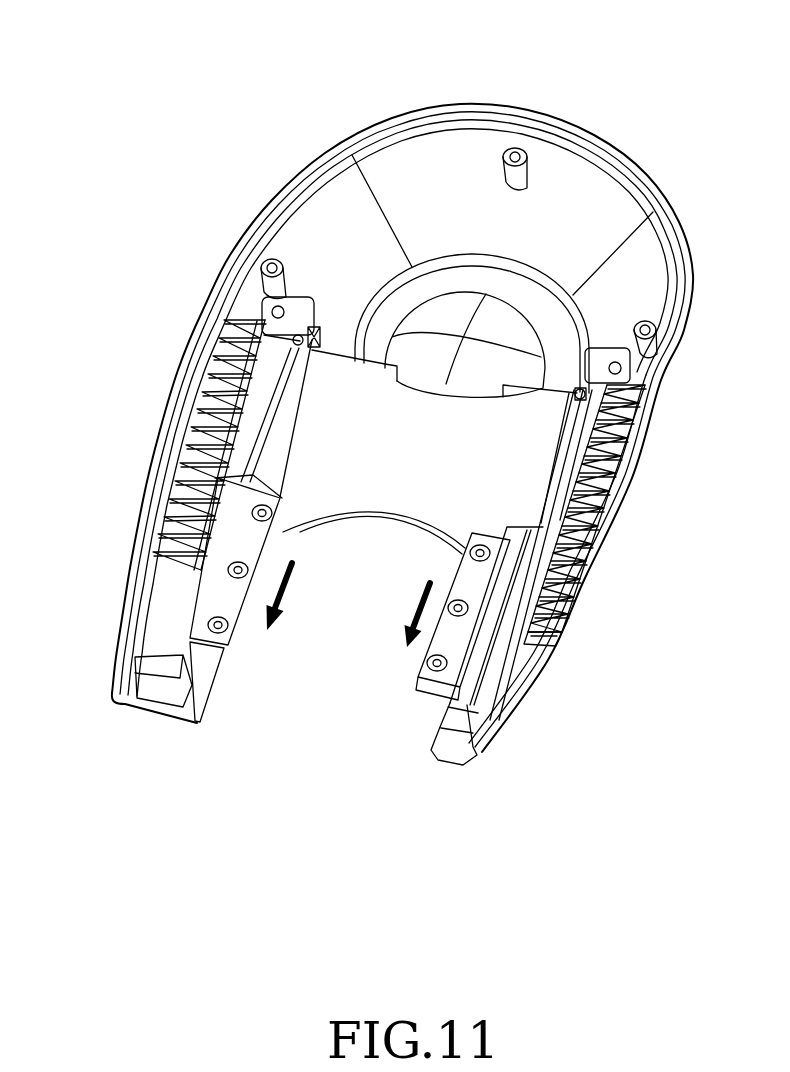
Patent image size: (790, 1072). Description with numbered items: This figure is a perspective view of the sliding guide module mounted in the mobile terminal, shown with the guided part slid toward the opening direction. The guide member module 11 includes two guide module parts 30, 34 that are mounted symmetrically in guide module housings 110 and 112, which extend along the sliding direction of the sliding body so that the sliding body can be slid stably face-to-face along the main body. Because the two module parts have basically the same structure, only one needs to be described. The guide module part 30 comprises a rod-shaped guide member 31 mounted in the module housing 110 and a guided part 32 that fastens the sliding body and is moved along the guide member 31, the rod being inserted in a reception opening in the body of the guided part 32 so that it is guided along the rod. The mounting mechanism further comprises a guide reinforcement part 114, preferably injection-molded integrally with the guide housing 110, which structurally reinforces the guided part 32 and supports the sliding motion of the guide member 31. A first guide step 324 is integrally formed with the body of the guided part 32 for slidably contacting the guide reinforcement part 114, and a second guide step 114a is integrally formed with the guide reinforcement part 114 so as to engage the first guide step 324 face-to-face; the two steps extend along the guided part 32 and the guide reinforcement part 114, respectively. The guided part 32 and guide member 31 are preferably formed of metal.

The guide member module 11 is at (592, 137).
The guide module housing 112 is at (180, 390).
The guide member 31 is at (560, 462).
The guide module housing 110 is at (598, 527).
The guide reinforcement part 114 is at (572, 568).
The second guide step 114a is at (540, 637).
The first guide step 324 is at (512, 673).
The guided part 32 is at (480, 695).
The guide module part 34 is at (237, 648).
The guide module part 30 is at (413, 687).